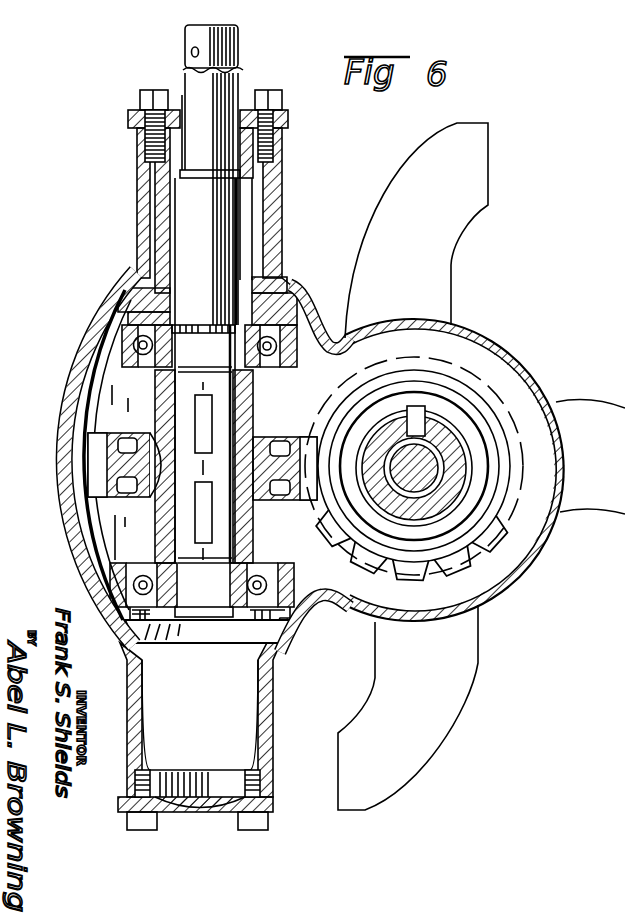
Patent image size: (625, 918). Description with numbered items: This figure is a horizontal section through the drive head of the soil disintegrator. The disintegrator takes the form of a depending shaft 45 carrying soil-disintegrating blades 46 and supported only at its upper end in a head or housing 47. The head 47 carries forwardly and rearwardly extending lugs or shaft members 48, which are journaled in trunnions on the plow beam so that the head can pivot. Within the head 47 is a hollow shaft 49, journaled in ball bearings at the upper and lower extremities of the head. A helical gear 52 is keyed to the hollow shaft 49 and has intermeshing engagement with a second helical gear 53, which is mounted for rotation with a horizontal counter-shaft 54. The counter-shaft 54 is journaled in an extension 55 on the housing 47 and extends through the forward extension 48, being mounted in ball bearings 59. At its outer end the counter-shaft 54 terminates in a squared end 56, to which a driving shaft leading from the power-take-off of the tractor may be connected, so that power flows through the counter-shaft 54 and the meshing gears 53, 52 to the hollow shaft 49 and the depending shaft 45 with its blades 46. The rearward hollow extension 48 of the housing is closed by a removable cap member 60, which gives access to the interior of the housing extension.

The depending shaft 45 is at (405, 460).
The soil-disintegrating blades 46 is at (452, 267).
The head or housing 47 is at (502, 357).
The lugs or shaft members 48 is at (138, 194).
The hollow shaft 49 is at (380, 450).
The helical gear 52 is at (345, 557).
The helical gear 53 is at (100, 468).
The horizontal counter-shaft 54 is at (232, 500).
The extension on the housing 55 is at (106, 394).
The squared end 56 is at (238, 36).
The ball bearings 59 is at (124, 328).
The removable cap member 60 is at (182, 812).